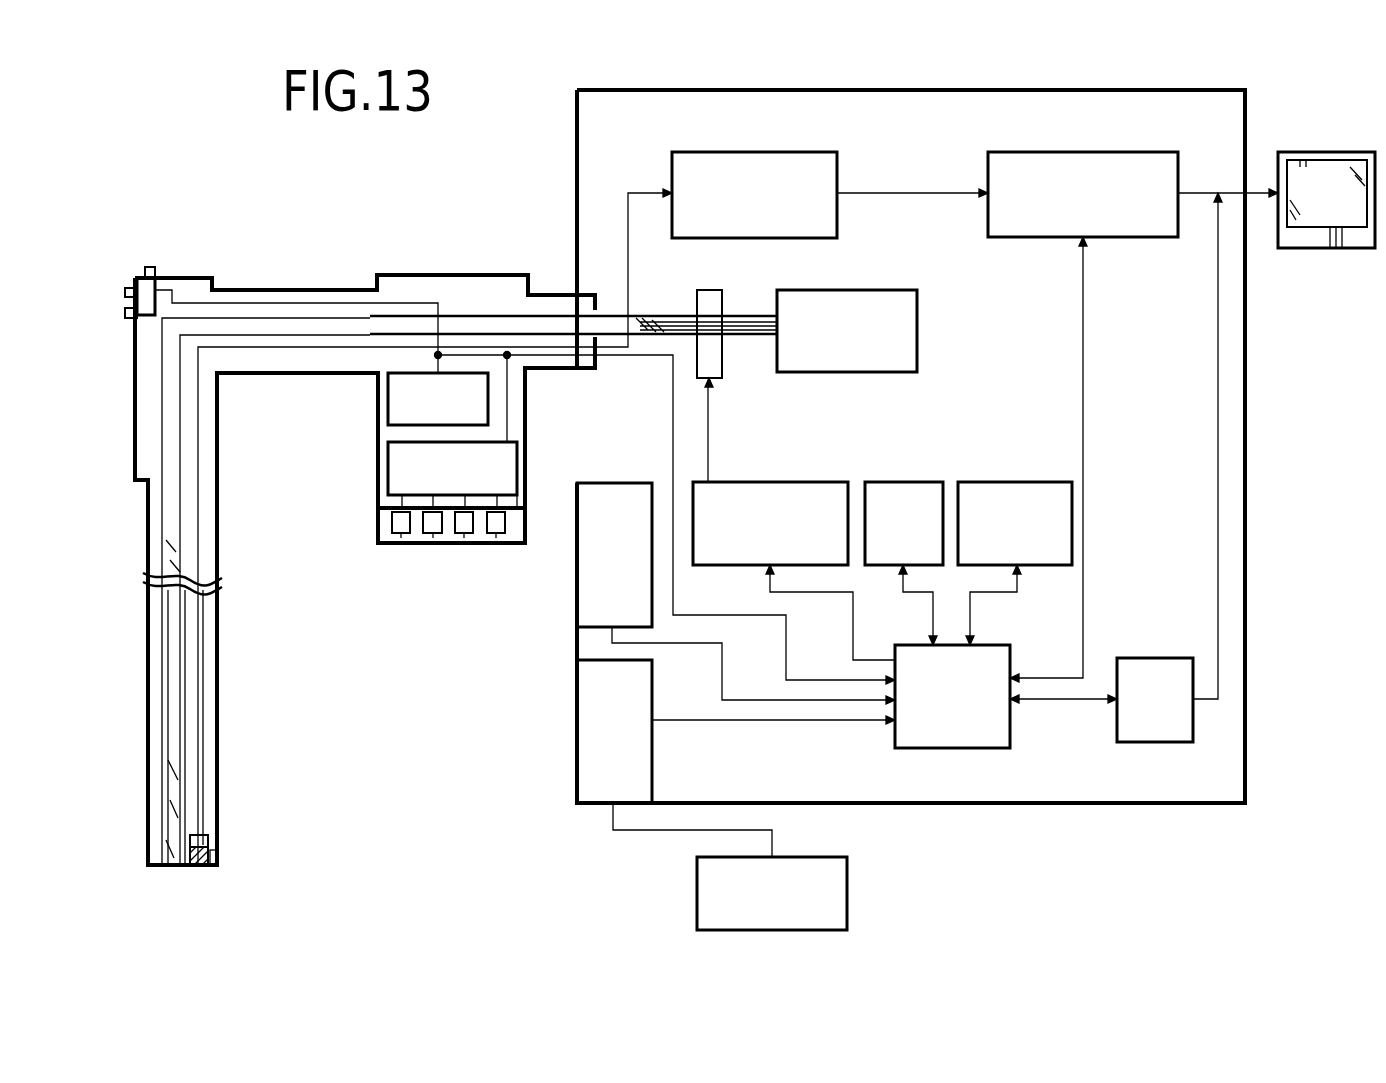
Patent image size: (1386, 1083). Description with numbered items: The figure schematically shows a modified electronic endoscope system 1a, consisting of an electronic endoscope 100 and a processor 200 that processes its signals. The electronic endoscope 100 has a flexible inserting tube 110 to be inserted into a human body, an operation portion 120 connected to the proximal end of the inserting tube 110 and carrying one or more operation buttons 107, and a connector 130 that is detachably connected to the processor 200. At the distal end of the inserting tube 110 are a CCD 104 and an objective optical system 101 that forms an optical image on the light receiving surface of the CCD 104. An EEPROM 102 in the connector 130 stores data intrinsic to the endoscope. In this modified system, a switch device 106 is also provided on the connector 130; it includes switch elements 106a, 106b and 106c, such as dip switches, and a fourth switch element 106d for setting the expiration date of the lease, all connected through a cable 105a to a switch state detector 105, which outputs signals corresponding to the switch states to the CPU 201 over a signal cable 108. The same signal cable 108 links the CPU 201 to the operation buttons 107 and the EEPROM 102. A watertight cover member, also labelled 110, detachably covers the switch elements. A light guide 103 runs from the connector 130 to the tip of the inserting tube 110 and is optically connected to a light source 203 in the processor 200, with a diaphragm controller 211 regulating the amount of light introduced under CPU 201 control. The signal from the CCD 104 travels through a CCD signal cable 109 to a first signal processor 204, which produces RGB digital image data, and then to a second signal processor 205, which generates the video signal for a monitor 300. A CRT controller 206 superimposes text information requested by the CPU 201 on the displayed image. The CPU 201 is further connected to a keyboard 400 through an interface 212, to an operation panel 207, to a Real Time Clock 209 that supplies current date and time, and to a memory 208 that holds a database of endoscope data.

The modified electronic endoscope system 1a is at (903, 82).
The electronic endoscope 100 is at (285, 290).
The objective optical system 101 is at (215, 855).
The EEPROM 102 is at (387, 407).
The light guide 103 is at (163, 668).
The CCD 104 is at (205, 835).
The switch state detector 105 is at (387, 450).
The cable 105a is at (403, 503).
The switch device 106 is at (433, 583).
The switch element 106a is at (395, 547).
The switch element 106b is at (430, 547).
The switch element 106c is at (467, 547).
The fourth switch element 106d is at (524, 559).
The operation buttons 107 is at (125, 312).
The signal cable 108 is at (555, 357).
The CCD signal cable 109 is at (237, 348).
The inserting tube 110 is at (378, 527).
The operation portion 120 is at (193, 278).
The connector 130 is at (535, 275).
The processor 200 is at (1245, 490).
The CPU 201 is at (945, 748).
The light source 203 is at (873, 290).
The first signal processor 204 is at (837, 165).
The second signal processor 205 is at (1140, 237).
The CRT controller 206 is at (1145, 658).
The operation panel 207 is at (582, 620).
The memory 208 is at (995, 482).
The Real Time Clock 209 is at (890, 482).
The diaphragm controller 211 is at (758, 482).
The interface 212 is at (588, 720).
The monitor 300 is at (1345, 248).
The keyboard 400 is at (847, 890).